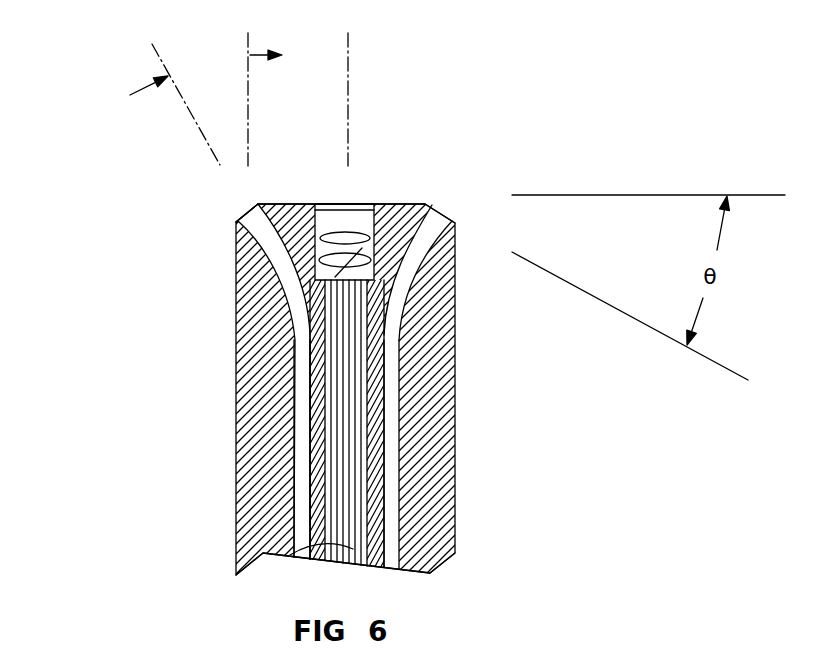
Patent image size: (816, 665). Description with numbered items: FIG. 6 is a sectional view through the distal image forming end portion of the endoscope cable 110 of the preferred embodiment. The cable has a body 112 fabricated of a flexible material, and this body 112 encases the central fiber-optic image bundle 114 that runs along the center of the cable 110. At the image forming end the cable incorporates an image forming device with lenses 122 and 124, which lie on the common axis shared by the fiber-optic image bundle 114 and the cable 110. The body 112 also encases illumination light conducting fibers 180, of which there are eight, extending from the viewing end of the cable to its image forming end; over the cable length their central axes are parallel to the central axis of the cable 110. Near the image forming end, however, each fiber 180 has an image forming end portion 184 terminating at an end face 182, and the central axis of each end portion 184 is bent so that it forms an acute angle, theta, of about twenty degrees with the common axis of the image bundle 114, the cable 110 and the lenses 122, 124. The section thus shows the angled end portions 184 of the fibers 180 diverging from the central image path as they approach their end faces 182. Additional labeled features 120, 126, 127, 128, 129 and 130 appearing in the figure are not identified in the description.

The endoscope cable 110 is at (494, 564).
The body 112 is at (428, 493).
The central fiber-optic image bundle 114 is at (262, 552).
The lens housing bore 120 is at (352, 203).
The lens 122 is at (342, 260).
The lens 124 is at (380, 313).
The left channel 126 is at (238, 257).
The tilt angle axis 127 is at (267, 203).
The optical axis 128 is at (300, 203).
The corner edge 129 is at (237, 222).
The front end face 130 is at (423, 190).
The illumination light conducting fibers 180 is at (298, 463).
The end face 182 is at (240, 213).
The image forming end portion 184 is at (265, 244).